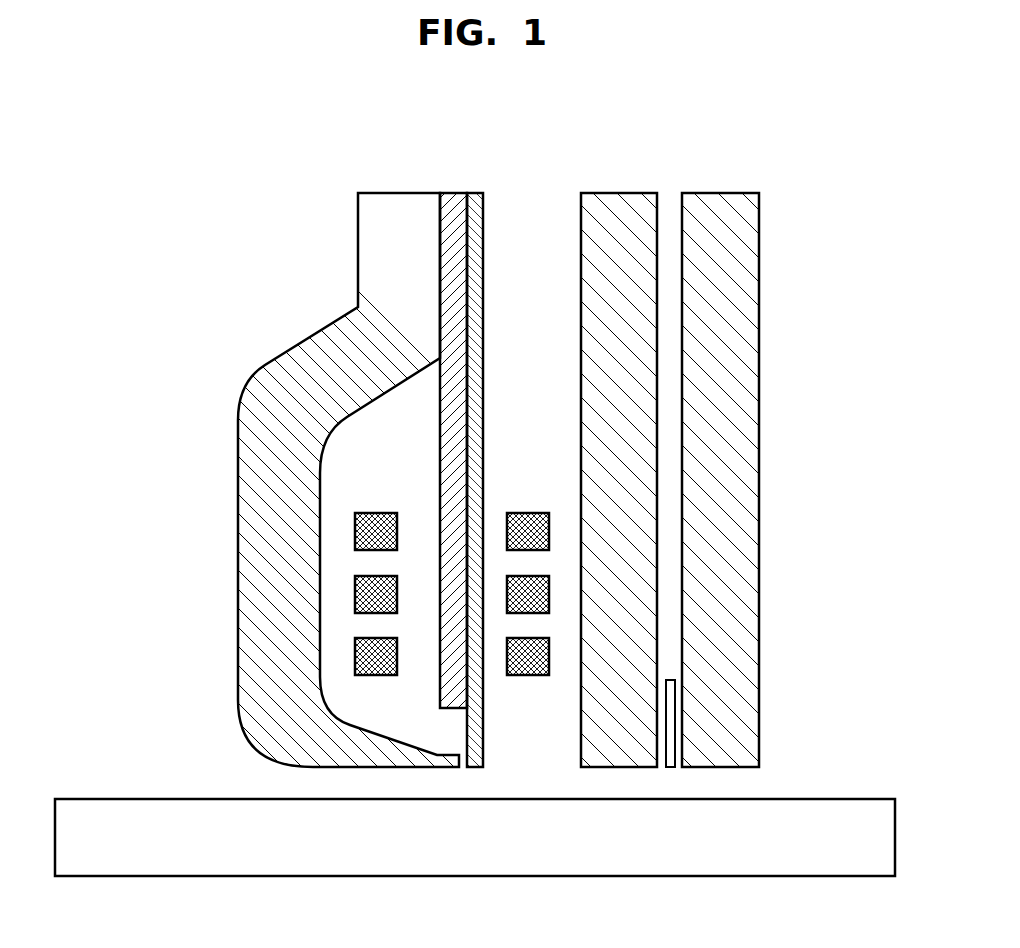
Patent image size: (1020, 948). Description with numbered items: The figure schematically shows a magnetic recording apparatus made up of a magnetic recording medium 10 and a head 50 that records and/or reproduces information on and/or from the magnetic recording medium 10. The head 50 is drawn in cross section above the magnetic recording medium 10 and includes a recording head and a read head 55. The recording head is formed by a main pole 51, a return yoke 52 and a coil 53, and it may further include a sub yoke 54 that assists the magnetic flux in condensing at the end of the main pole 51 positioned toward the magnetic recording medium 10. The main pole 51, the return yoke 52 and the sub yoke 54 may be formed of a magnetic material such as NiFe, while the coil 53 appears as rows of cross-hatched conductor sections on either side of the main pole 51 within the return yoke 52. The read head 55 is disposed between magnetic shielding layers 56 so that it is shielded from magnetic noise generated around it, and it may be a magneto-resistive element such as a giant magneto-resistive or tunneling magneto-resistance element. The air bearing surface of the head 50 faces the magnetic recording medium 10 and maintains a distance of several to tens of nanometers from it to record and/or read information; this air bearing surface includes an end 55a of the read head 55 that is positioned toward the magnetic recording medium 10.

The magnetic recording medium 10 is at (160, 800).
The head 50 is at (214, 244).
The main pole 51 is at (479, 192).
The return yoke 52 is at (401, 192).
The coil 53 is at (355, 657).
The sub yoke 54 is at (452, 192).
The read head 55 is at (671, 719).
The end of the read head 55a is at (670, 767).
The magnetic shielding layers 56 is at (703, 193).